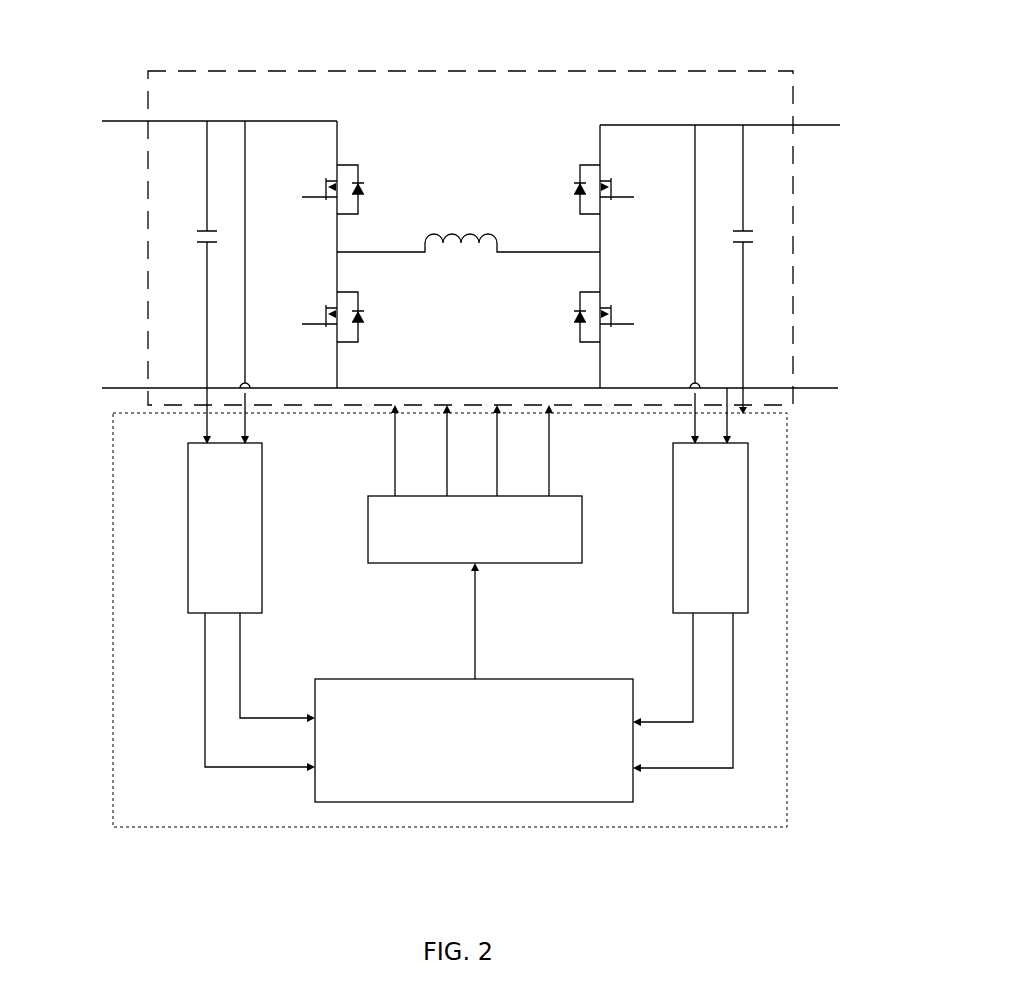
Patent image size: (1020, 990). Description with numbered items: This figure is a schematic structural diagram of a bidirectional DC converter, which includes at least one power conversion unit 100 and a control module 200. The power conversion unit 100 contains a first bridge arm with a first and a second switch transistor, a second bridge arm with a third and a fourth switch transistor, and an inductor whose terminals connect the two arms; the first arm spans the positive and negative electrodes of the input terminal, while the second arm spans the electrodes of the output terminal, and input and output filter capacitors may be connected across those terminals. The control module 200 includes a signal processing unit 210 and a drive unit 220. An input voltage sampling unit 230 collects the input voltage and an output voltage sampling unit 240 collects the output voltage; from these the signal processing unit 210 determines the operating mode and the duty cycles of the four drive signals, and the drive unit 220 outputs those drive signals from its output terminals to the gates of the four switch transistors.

The power conversion unit 100 is at (485, 71).
The control module 200 is at (787, 505).
The signal processing unit 210 is at (462, 808).
The drive unit 220 is at (428, 565).
The input voltage sampling unit 230 is at (188, 515).
The output voltage sampling unit 240 is at (748, 562).